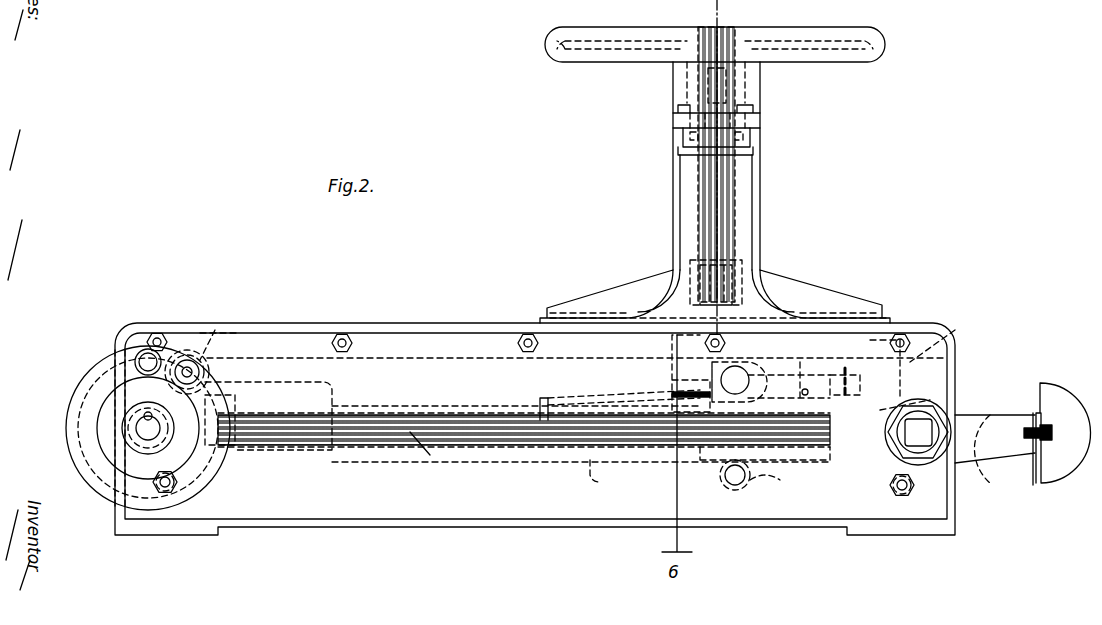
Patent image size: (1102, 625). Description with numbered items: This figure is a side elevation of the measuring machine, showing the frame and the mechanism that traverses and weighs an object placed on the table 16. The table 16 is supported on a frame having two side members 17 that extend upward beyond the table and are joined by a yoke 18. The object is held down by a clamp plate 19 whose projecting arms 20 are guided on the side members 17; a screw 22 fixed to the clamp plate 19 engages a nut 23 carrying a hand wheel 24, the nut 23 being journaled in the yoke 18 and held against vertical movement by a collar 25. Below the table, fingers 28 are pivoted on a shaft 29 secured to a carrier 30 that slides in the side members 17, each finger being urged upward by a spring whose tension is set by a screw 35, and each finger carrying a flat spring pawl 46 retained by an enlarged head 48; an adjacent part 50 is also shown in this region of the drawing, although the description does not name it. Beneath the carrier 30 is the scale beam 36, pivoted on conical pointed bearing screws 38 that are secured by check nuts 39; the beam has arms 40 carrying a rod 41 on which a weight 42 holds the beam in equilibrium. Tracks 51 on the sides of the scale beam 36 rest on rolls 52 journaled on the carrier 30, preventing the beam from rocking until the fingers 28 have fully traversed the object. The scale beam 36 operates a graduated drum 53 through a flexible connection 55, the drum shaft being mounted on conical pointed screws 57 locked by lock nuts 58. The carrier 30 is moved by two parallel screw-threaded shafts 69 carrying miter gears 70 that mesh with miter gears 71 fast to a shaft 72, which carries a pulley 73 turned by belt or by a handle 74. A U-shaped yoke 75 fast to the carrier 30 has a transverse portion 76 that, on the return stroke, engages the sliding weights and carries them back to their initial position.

The table 16 is at (420, 322).
The side members 17 is at (762, 232).
The yoke 18 is at (745, 105).
The clamp plate 19 is at (862, 290).
The projecting arms 20 is at (690, 275).
The screw 22 is at (695, 200).
The nut 23 is at (735, 75).
The hand wheel 24 is at (885, 45).
The collar 25 is at (755, 145).
The fingers 28 is at (953, 336).
The shaft 29 is at (742, 372).
The carrier 30 is at (758, 465).
The screw 35 is at (670, 392).
The scale beam 36 is at (416, 452).
The bearing screws 38 is at (922, 428).
The check nuts 39 is at (905, 468).
The arms 40 is at (985, 458).
The rod 41 is at (1045, 440).
The weight 42 is at (1055, 388).
The pawls 46 is at (885, 400).
The enlarged head 48 is at (800, 372).
The spring 50 is at (848, 372).
The tracks 51 is at (606, 477).
The rolls 52 is at (727, 484).
The drum 53 is at (228, 323).
The flexible connection 55 is at (222, 398).
The conical pointed screws 57 is at (192, 372).
The lock nuts 58 is at (198, 364).
The screw-threaded shafts 69 is at (310, 448).
The miter gears 70 is at (190, 470).
The miter gears 71 is at (140, 465).
The shaft 72 is at (148, 428).
The pulley 73 is at (68, 415).
The handle 74 is at (138, 357).
The U-shaped yoke 75 is at (582, 395).
The transverse portion 76 is at (538, 400).